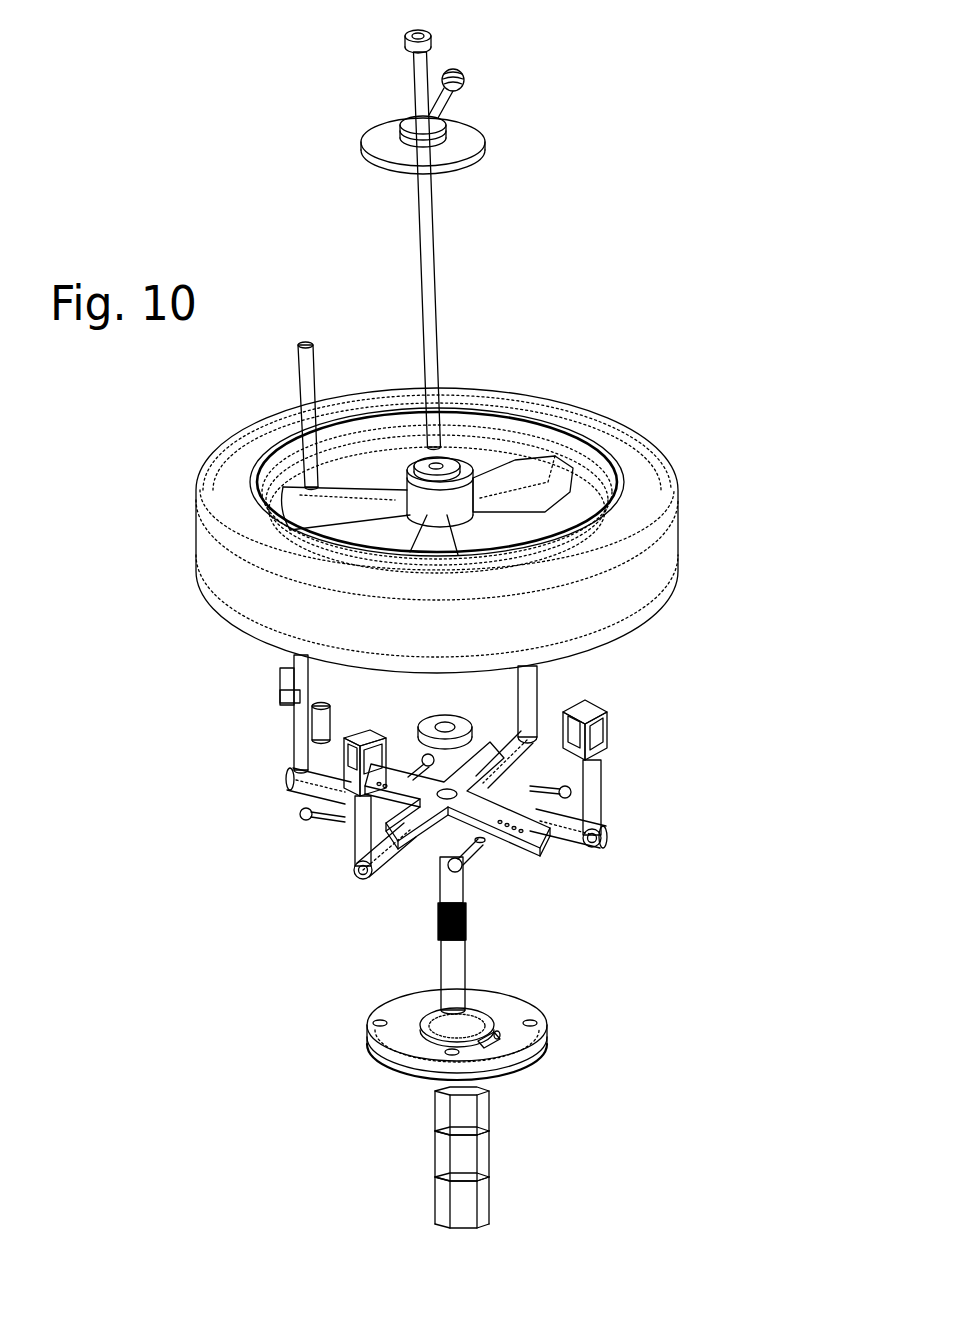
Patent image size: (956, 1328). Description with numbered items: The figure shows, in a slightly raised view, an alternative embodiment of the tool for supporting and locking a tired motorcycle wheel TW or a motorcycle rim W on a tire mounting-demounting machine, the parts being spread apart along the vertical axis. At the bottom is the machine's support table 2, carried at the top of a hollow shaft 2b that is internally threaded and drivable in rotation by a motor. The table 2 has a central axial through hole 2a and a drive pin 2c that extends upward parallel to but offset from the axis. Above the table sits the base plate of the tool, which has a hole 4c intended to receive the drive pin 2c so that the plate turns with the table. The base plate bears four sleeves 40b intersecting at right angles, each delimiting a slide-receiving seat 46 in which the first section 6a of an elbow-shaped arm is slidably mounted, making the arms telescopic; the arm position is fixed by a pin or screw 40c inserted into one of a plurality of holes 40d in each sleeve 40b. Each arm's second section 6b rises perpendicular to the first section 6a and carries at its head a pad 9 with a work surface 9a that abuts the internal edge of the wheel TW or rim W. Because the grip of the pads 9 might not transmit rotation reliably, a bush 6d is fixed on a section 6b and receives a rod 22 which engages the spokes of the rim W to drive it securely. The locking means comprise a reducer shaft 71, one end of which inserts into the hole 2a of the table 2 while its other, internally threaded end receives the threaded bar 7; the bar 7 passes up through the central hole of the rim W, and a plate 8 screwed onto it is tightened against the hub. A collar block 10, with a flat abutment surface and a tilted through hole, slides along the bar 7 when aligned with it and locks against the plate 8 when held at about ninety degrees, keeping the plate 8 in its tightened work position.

The collar block 10 is at (400, 127).
The plate 8 is at (377, 143).
The threaded bar 7 is at (419, 280).
The rod 22 is at (298, 390).
The rim W is at (548, 452).
The tired motorcycle wheel TW is at (196, 538).
The pad 9 is at (294, 740).
The work surface 9a is at (605, 712).
The bush 6d is at (306, 753).
The second section 6b is at (603, 797).
The first section 6a is at (570, 846).
The sleeve 40b is at (400, 775).
The pin 40c is at (325, 820).
The hole 40d is at (512, 842).
The hole 4c is at (478, 852).
The slide-receiving seat 46 is at (393, 872).
The reducer shaft 71 is at (441, 958).
The support table 2 is at (388, 1072).
The axial through hole 2a is at (476, 1014).
The drive pin 2c is at (502, 1040).
The hollow shaft 2b is at (489, 1138).